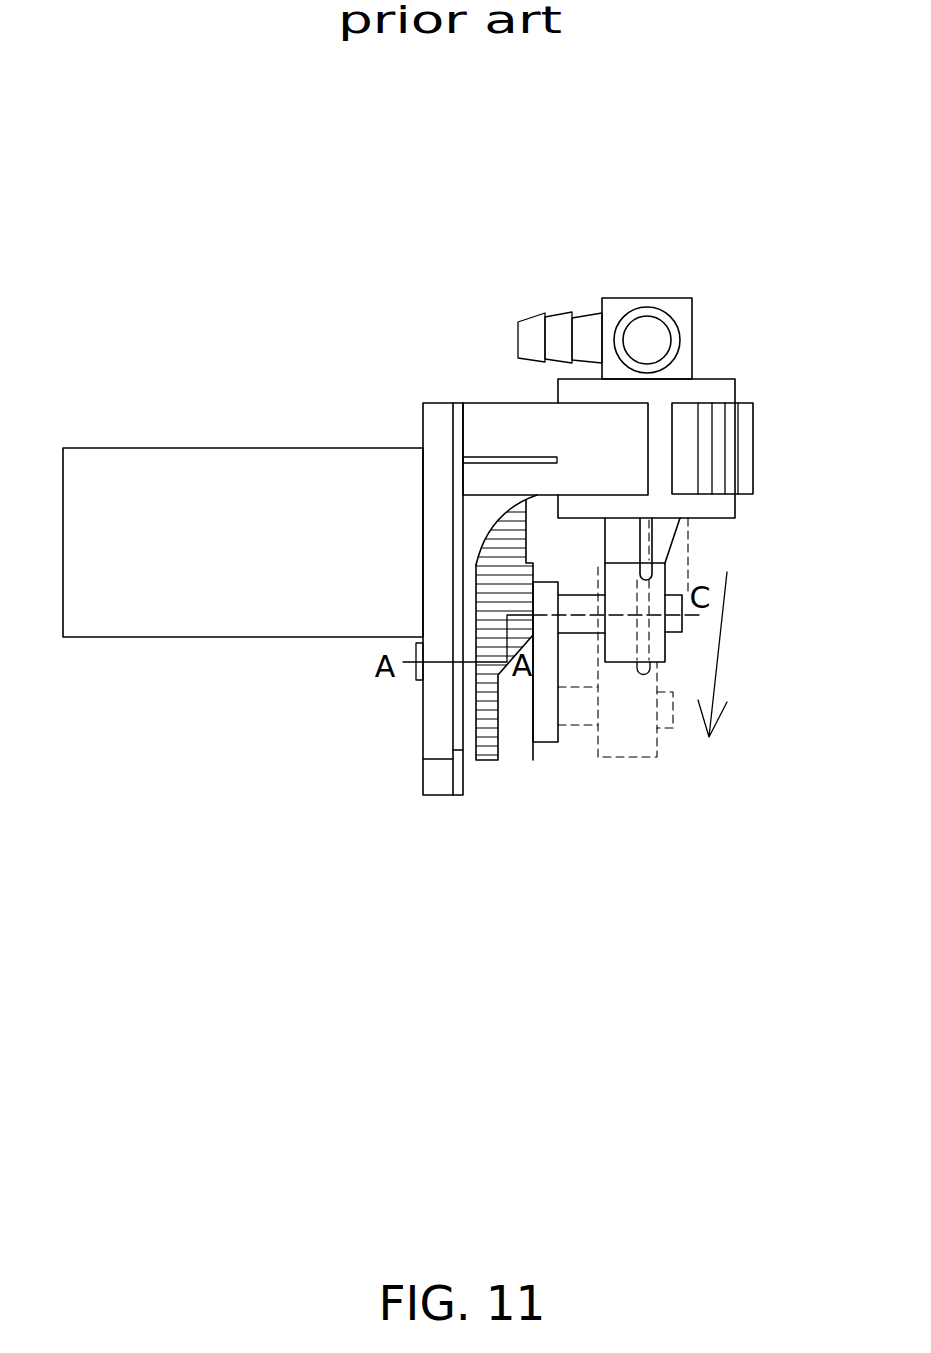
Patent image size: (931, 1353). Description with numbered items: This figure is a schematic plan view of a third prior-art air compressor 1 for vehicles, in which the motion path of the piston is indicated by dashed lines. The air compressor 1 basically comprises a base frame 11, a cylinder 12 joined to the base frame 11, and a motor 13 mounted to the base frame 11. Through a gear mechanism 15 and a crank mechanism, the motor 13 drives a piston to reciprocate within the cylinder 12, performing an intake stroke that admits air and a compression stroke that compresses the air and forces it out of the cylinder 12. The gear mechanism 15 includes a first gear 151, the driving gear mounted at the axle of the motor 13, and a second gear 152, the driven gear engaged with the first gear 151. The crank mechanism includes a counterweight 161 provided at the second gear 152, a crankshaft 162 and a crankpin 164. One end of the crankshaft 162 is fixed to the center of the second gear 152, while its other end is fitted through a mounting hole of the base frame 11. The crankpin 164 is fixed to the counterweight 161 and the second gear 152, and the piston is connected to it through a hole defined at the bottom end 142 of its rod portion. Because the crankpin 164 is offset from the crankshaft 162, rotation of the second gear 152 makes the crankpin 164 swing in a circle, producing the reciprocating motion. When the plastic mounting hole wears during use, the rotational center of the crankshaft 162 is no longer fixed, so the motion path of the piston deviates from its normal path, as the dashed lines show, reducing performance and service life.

The air compressor 1 is at (385, 407).
The base frame 11 is at (437, 420).
The cylinder 12 is at (715, 388).
The motor 13 is at (203, 622).
The gear mechanism 15 is at (475, 615).
The first gear 151 is at (500, 540).
The second gear 152 is at (487, 732).
The counterweight 161 is at (550, 733).
The crankshaft 162 is at (418, 678).
The crankpin 164 is at (589, 623).
The bottom end 142 is at (665, 645).